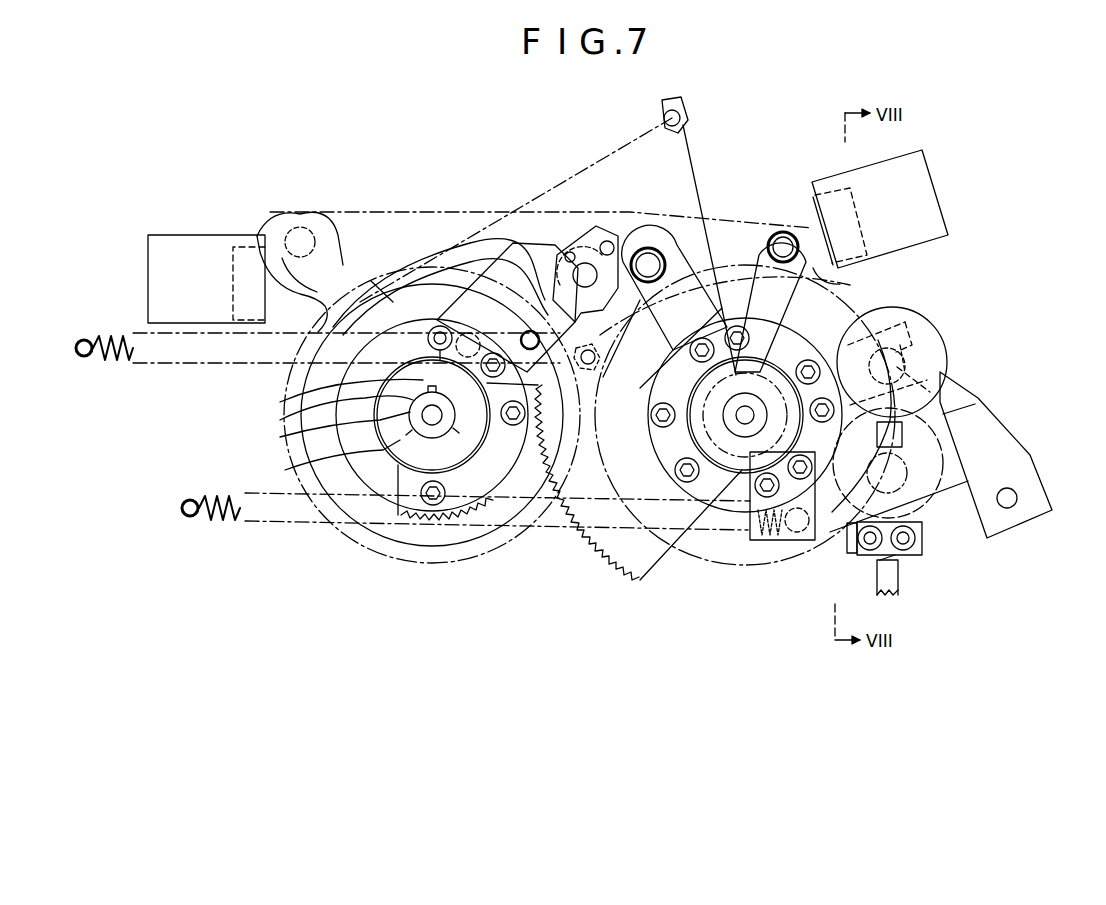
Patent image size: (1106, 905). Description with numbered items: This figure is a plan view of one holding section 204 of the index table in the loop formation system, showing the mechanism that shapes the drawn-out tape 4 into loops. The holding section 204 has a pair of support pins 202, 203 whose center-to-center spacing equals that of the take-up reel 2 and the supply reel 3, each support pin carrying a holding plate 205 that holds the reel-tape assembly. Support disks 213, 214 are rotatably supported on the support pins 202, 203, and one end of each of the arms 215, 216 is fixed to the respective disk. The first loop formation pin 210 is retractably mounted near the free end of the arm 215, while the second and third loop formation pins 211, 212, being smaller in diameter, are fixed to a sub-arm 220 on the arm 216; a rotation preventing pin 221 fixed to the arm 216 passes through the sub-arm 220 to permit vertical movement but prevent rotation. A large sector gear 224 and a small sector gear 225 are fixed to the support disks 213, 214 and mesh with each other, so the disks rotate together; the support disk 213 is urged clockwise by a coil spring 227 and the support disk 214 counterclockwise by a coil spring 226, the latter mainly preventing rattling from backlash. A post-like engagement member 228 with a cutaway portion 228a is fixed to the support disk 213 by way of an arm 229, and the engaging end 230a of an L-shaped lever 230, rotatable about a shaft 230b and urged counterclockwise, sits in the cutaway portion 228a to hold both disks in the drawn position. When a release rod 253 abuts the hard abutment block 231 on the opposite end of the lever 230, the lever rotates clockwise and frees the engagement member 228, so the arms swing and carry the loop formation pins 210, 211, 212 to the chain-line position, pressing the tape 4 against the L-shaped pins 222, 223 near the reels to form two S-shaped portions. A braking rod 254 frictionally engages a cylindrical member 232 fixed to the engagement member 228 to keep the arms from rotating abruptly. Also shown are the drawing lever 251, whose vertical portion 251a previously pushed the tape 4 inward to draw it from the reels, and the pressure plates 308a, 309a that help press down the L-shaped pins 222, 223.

The take-up reel 2 is at (762, 568).
The supply reel 3 is at (410, 568).
The tape 4 is at (578, 157).
The support pin 202 is at (738, 418).
The support pin 203 is at (312, 433).
The holding section 204 is at (300, 410).
The holding plate 205 is at (300, 470).
The first loop formation pin 210 is at (652, 238).
The second loop formation pin 211 is at (302, 226).
The third loop formation pin 212 is at (286, 242).
The support disk 213 is at (670, 362).
The support disk 214 is at (290, 389).
The arm 215 is at (652, 228).
The arm 216 is at (505, 240).
The sub-arm 220 is at (264, 226).
The rotation preventing pin 221 is at (538, 332).
The L-shaped pin 222 is at (846, 280).
The L-shaped pin 223 is at (346, 346).
The large sector gear 224 is at (640, 578).
The small sector gear 225 is at (493, 487).
The coil spring 226 is at (210, 366).
The coil spring 227 is at (300, 525).
The engagement member 228 is at (920, 308).
The cutaway portion 228a is at (940, 338).
The arm 229 is at (800, 312).
The L-shaped lever 230 is at (1020, 446).
The engaging end 230a is at (950, 360).
The shaft 230b is at (1012, 510).
The abutment block 231 is at (925, 540).
The cylindrical member 232 is at (900, 308).
The drawing lever 251 is at (689, 110).
The vertical portion 251a is at (690, 138).
The release rod 253 is at (898, 582).
The braking rod 254 is at (903, 432).
The pressure plate 308a is at (936, 200).
The pressure plate 309a is at (148, 279).